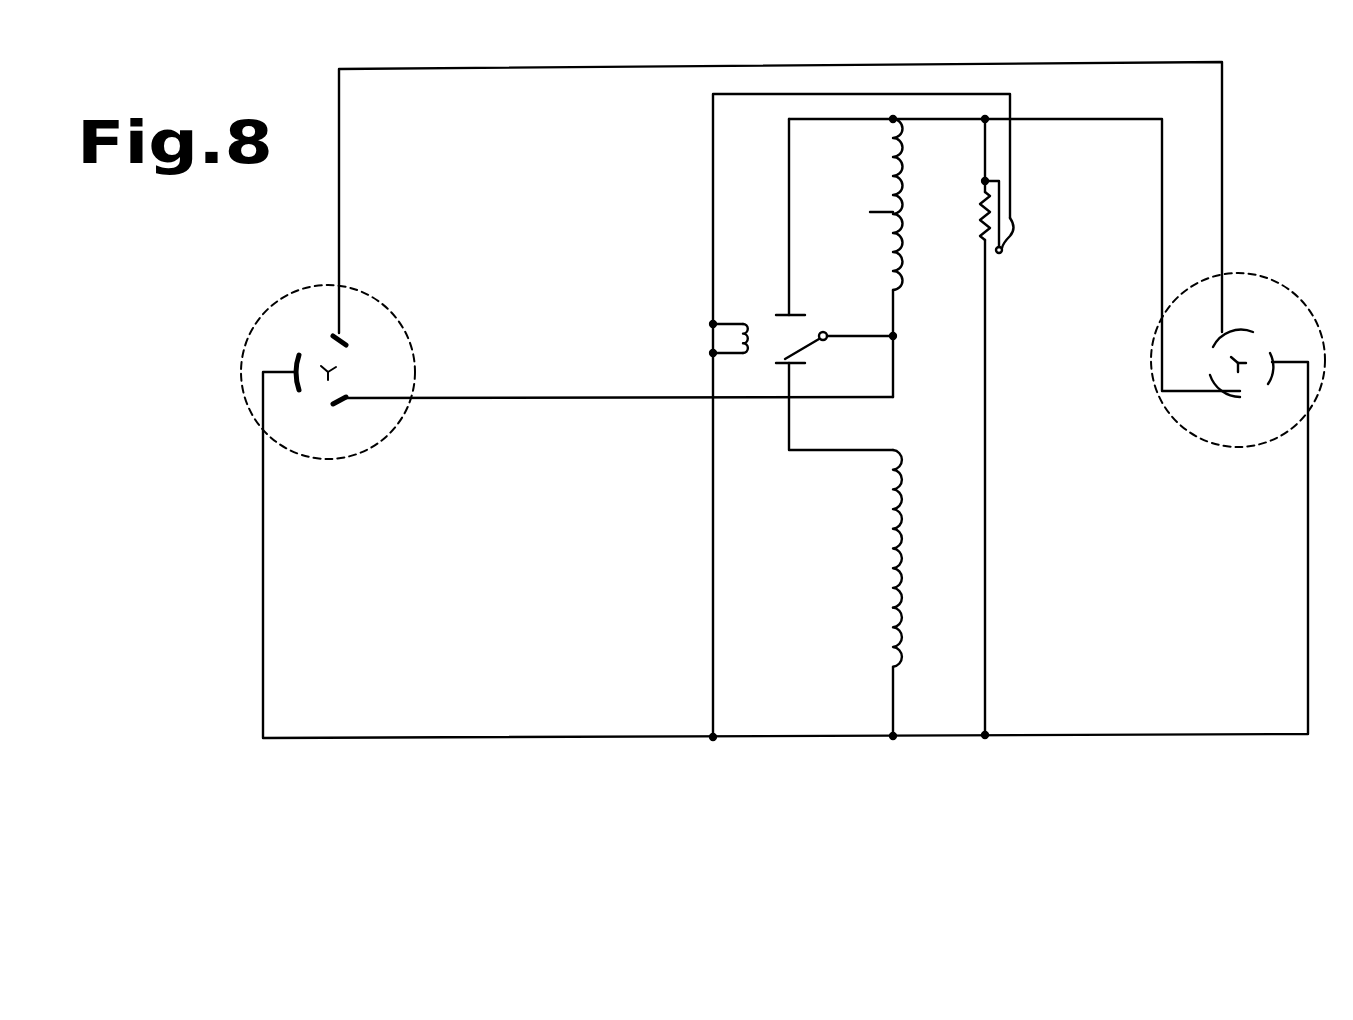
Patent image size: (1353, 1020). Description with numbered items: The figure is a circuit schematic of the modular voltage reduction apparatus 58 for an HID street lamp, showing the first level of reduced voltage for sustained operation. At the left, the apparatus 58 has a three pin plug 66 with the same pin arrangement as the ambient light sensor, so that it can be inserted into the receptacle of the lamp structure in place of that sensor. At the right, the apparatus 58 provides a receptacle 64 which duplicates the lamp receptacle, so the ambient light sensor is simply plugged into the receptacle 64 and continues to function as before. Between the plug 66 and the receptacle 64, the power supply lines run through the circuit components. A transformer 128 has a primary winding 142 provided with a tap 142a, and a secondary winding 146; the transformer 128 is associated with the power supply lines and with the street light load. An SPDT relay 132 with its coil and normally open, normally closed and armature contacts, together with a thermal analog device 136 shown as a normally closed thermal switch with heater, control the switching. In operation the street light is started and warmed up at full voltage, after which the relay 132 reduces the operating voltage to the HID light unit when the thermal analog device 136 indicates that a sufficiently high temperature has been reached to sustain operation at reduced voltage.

The voltage reduction apparatus 58 is at (320, 278).
The three pin plug 66 is at (323, 477).
The receptacle 64 is at (1199, 462).
The SPDT relay 132 is at (783, 310).
The primary winding 142 is at (914, 218).
The tap 142a is at (865, 207).
The thermal analog device 136 is at (1008, 265).
The transformer 128 is at (873, 487).
The secondary winding 146 is at (893, 615).